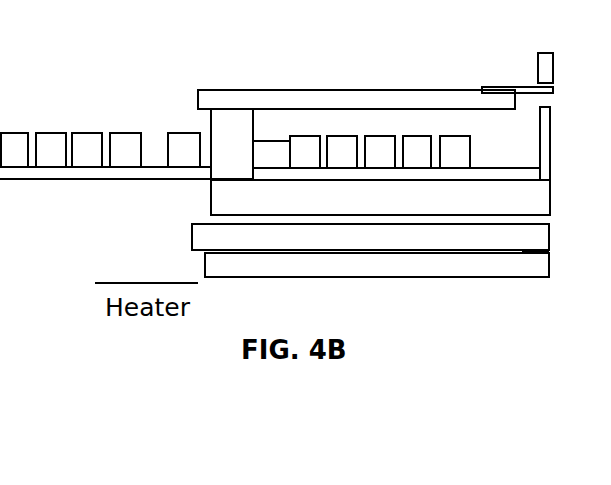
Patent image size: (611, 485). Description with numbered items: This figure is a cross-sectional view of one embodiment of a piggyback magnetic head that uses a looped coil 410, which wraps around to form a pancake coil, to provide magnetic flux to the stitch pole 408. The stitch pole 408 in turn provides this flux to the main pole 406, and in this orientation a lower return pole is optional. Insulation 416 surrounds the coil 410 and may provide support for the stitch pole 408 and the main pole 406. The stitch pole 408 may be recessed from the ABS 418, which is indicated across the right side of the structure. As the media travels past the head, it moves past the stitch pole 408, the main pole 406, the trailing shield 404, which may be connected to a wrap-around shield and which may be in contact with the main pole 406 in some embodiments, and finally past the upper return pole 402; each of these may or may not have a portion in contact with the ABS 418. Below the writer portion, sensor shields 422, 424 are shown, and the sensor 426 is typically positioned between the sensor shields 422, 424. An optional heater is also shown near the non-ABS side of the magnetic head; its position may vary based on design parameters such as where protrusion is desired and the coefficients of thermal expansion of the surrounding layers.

The upper return pole 402 is at (553, 65).
The trailing shield 404 is at (550, 148).
The main pole 406 is at (520, 87).
The stitch pole 408 is at (382, 90).
The looped coil 410 is at (455, 137).
The insulation 416 is at (431, 206).
The ABS 418 is at (574, 188).
The sensor shield 422 is at (192, 237).
The sensor shield 424 is at (205, 260).
The sensor 426 is at (545, 250).